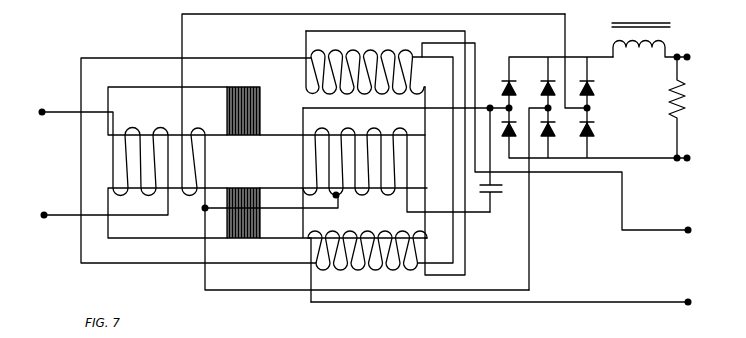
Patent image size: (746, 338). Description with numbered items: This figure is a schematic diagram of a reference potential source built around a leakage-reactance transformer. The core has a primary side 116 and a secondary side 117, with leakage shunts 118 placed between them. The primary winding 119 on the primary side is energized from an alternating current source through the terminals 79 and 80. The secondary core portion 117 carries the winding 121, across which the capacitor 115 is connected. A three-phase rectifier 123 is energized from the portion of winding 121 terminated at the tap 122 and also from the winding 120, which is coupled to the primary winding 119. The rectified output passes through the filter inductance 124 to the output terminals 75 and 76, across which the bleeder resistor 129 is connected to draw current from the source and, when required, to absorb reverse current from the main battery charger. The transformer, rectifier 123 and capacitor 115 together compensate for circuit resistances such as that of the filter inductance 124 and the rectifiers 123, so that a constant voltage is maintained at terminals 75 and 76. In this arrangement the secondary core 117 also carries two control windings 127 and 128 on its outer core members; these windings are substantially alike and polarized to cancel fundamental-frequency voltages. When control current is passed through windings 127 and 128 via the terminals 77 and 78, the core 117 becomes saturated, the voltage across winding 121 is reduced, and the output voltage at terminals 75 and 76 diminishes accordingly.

The output terminal 75 is at (689, 57).
The output terminal 76 is at (691, 159).
The control terminal 77 is at (691, 230).
The control terminal 78 is at (691, 302).
The alternating current input terminal 79 is at (44, 110).
The alternating current input terminal 80 is at (46, 213).
The capacitor 115 is at (504, 190).
The primary side of leakage-reactance core 116 is at (82, 172).
The secondary side of transformer core 117 is at (455, 245).
The leakage shunts 118 is at (262, 121).
The primary winding 119 is at (158, 130).
The winding 120 is at (191, 200).
The secondary winding 121 is at (400, 129).
The tap 122 is at (338, 197).
The three-phase rectifier 123 is at (548, 56).
The filter inductance 124 is at (650, 12).
The control winding 127 is at (368, 55).
The control winding 128 is at (345, 271).
The bleeder resistor 129 is at (669, 126).